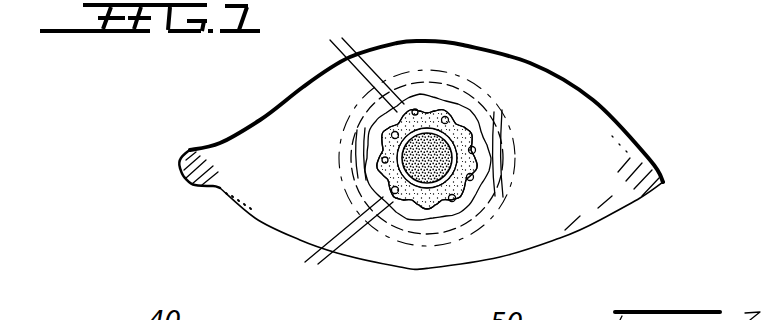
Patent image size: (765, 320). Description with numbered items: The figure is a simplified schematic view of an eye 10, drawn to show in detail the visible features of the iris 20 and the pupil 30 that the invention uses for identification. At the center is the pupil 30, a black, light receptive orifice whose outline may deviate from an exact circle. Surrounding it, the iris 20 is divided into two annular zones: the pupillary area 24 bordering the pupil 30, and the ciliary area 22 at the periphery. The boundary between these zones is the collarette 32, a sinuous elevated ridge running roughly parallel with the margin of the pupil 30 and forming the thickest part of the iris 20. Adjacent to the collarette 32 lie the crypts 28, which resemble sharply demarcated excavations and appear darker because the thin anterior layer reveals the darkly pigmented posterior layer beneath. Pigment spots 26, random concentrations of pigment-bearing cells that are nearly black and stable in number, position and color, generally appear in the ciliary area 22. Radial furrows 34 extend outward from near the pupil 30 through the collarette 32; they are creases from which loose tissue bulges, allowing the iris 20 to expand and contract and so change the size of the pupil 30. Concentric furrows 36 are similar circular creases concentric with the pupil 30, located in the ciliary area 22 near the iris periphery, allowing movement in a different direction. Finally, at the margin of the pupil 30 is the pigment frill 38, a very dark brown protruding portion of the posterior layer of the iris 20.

The eye 10 is at (596, 100).
The iris 20 is at (512, 134).
The ciliary area 22 is at (413, 108).
The pupillary area 24 is at (370, 146).
The pigment spots 26 is at (470, 123).
The crypts 28 is at (470, 180).
The pupil 30 is at (427, 160).
The collarette 32 is at (442, 112).
The radial furrows 34 is at (368, 181).
The concentric furrows 36 is at (338, 152).
The pigment frill 38 is at (422, 190).